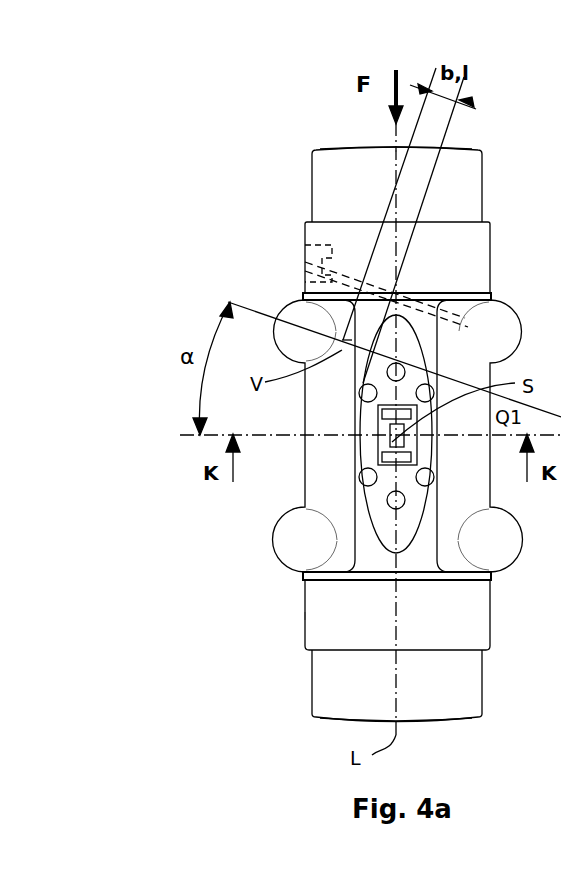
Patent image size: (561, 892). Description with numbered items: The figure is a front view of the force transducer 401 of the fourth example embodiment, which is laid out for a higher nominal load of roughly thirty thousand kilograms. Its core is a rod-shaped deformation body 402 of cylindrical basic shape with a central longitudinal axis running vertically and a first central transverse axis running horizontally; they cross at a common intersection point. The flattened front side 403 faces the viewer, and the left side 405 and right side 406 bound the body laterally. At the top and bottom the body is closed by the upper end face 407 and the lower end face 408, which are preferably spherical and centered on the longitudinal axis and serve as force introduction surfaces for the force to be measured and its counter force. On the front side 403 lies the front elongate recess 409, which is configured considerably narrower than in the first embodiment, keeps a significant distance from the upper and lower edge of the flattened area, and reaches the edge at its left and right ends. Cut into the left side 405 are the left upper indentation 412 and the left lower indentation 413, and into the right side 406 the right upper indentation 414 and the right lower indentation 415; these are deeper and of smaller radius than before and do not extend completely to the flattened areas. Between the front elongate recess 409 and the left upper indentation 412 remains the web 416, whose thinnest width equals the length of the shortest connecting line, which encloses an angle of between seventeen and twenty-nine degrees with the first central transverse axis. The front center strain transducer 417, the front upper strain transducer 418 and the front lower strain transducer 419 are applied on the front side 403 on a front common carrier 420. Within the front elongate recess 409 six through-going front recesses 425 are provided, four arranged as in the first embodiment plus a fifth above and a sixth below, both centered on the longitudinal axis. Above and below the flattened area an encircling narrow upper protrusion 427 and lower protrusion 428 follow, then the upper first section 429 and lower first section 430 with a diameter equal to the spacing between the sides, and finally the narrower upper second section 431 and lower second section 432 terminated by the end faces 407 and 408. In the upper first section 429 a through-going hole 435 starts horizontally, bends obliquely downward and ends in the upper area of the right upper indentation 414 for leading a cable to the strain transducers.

The force transducer 401 is at (232, 132).
The deformation body 402 is at (350, 563).
The front side 403 is at (330, 610).
The left side 405 is at (304, 493).
The right side 406 is at (490, 500).
The upper end face 407 is at (378, 148).
The lower end face 408 is at (420, 725).
The front elongate recess 409 is at (452, 522).
The left upper indentation 412 is at (345, 335).
The left lower indentation 413 is at (345, 535).
The right upper indentation 414 is at (465, 340).
The right lower indentation 415 is at (450, 540).
The web 416 is at (343, 344).
The front center strain transducer 417 is at (385, 440).
The front upper strain transducer 418 is at (372, 414).
The front lower strain transducer 419 is at (380, 455).
The front common carrier 420 is at (416, 443).
The front recesses 425 is at (440, 373).
The upper protrusion 427 is at (492, 297).
The lower protrusion 428 is at (490, 582).
The upper first section 429 is at (468, 262).
The lower first section 430 is at (475, 640).
The upper second section 431 is at (450, 185).
The lower second section 432 is at (455, 702).
The through-going hole 435 is at (332, 275).